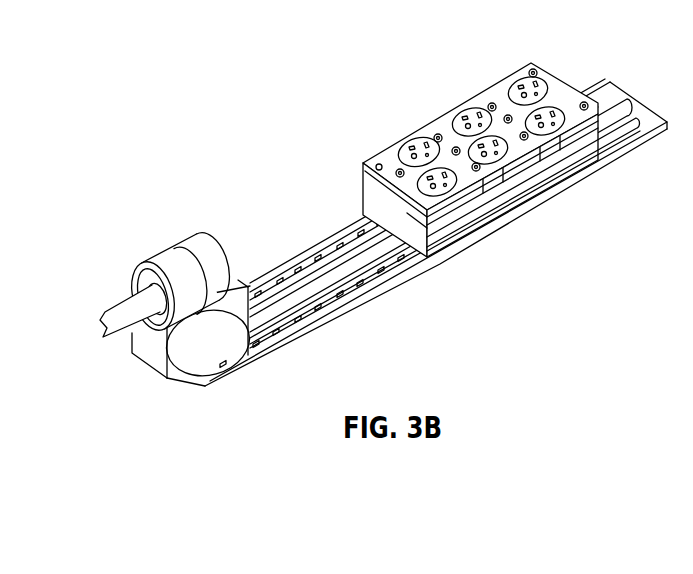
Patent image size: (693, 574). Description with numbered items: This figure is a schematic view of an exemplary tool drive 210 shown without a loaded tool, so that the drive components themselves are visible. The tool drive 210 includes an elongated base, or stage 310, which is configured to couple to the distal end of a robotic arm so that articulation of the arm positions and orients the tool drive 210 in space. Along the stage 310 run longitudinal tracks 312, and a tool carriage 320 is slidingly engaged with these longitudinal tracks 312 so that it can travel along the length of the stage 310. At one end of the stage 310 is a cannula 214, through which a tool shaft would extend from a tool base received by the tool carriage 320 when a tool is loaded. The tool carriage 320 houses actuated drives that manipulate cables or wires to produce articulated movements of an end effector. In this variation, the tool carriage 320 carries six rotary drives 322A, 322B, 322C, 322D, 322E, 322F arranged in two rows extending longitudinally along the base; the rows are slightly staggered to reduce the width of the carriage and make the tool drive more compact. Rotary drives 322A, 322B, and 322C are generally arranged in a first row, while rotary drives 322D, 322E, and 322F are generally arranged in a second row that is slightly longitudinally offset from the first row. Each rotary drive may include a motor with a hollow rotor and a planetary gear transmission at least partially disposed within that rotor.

The tool drive 210 is at (157, 92).
The cannula 214 is at (152, 260).
The elongated base (stage) 310 is at (341, 317).
The longitudinal tracks 312 is at (323, 247).
The tool carriage 320 is at (380, 203).
The rotary drive 322A is at (517, 79).
The rotary drive 322B is at (458, 117).
The rotary drive 322C is at (397, 140).
The rotary drive 322D is at (557, 124).
The rotary drive 322E is at (517, 157).
The rotary drive 322F is at (459, 122).